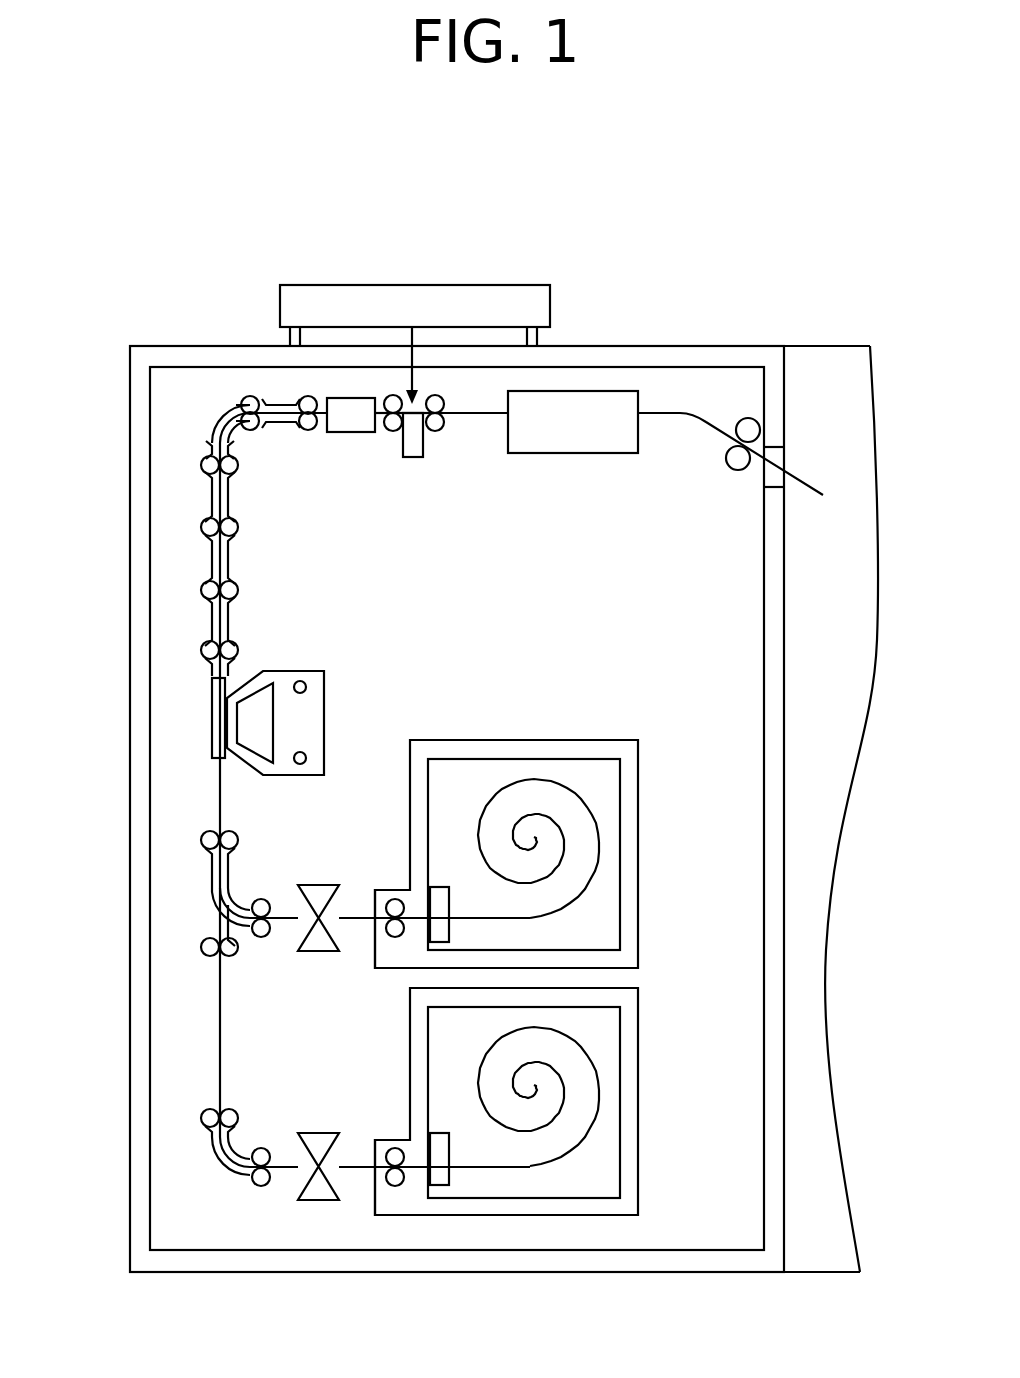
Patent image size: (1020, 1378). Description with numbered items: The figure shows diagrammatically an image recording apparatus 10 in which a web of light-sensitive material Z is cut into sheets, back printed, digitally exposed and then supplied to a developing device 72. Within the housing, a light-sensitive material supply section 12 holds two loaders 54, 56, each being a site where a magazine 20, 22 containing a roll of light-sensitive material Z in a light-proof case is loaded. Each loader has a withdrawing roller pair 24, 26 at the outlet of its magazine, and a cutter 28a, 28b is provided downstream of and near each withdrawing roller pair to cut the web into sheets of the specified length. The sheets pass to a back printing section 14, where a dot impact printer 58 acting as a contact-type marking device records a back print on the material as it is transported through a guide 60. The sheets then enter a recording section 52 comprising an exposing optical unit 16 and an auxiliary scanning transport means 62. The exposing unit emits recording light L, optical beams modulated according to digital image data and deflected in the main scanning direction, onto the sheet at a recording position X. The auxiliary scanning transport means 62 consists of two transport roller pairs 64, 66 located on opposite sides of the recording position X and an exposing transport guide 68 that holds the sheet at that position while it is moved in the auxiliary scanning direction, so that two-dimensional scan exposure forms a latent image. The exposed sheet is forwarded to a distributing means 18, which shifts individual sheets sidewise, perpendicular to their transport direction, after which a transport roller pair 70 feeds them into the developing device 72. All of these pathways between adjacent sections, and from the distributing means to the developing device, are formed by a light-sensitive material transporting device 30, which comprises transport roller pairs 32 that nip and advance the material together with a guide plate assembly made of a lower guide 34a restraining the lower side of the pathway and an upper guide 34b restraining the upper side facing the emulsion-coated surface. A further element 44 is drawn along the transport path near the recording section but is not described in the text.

The image recording apparatus 10 is at (726, 272).
The light-sensitive material supply section 12 is at (695, 774).
The back printing section 14 is at (438, 747).
The exposing optical unit 16 is at (431, 300).
The distributing means 18 is at (581, 440).
The magazine 20 is at (548, 758).
The magazine 22 is at (620, 1066).
The withdrawing roller pair 24 is at (395, 898).
The withdrawing roller pair 26 is at (395, 1148).
The cutter 28a is at (318, 958).
The cutter 28b is at (318, 1138).
The light-sensitive material transporting device 30 is at (176, 412).
The transport roller pairs 32 is at (210, 528).
The lower guide 34a is at (232, 488).
The upper guide 34b is at (258, 396).
The fiber holder 44 is at (350, 400).
The recording section 52 is at (416, 495).
The loader 54 is at (638, 862).
The loader 56 is at (638, 1116).
The dot impact printer 58 is at (326, 718).
The guide 60 is at (212, 742).
The auxiliary scanning transport means 62 is at (384, 474).
The transport roller pair 64 is at (392, 432).
The transport roller pair 66 is at (438, 434).
The exposing transport guide 68 is at (412, 452).
The transport roller pair 70 is at (740, 462).
The developing device 72 is at (830, 360).
The recording light L is at (410, 358).
The recording position X is at (433, 388).
The light-sensitive material Z is at (590, 888).